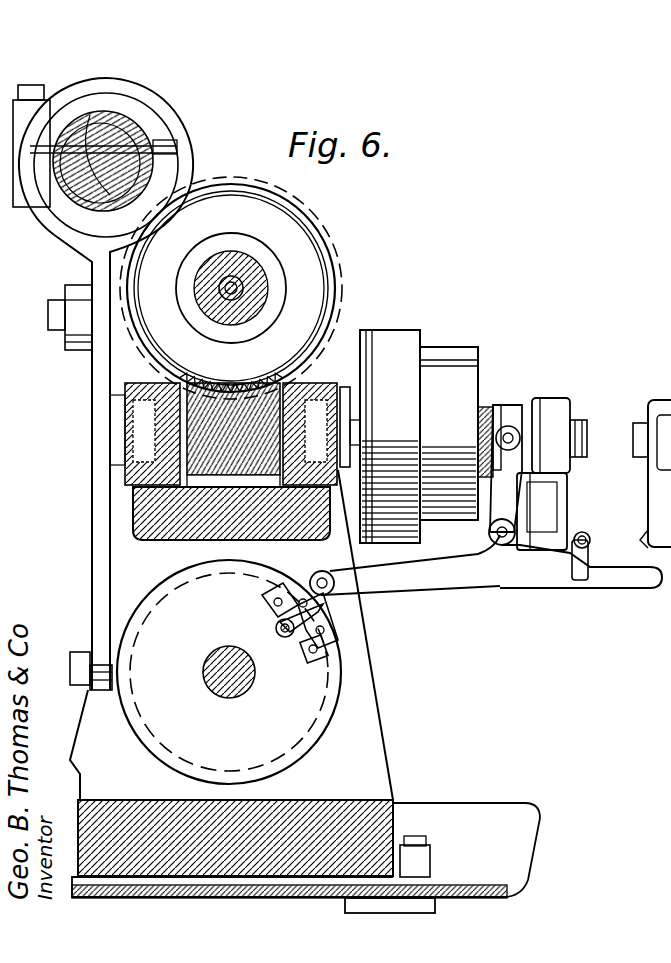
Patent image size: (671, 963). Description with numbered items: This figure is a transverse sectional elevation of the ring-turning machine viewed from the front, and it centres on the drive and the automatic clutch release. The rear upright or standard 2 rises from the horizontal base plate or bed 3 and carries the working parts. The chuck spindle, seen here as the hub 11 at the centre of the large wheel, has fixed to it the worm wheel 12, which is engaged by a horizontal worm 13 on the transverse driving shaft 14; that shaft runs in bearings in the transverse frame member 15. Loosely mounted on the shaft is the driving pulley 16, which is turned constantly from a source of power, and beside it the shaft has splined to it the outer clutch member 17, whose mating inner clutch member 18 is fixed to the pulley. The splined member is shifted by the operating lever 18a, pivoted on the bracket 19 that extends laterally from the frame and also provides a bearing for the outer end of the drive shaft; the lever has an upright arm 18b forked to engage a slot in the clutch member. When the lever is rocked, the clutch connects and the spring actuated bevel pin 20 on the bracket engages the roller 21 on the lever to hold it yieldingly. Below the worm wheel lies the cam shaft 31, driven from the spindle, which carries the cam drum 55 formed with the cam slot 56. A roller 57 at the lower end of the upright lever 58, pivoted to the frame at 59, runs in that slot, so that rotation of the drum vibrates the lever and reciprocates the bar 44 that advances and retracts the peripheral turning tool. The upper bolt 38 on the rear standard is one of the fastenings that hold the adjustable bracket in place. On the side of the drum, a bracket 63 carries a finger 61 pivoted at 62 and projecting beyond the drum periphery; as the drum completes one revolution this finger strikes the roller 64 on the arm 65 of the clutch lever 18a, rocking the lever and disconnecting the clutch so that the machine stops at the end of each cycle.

The rear upright or standard 2 is at (206, 439).
The horizontal base plate or bed 3 is at (322, 802).
The hub of gear 11 is at (266, 275).
The worm wheel 12 is at (344, 300).
The worm 13 is at (248, 395).
The driving shaft 14 is at (313, 295).
The transverse frame member 15 is at (178, 542).
The driving pulley 16 is at (441, 358).
The outer clutch member 17 is at (500, 400).
The inner clutch member 18 is at (485, 410).
The operating lever 18a is at (575, 578).
The upright arm 18b is at (508, 497).
The bracket 19 is at (493, 415).
The spring actuated bevel pin 20 is at (585, 536).
The roller 21 is at (589, 545).
The cam shaft 31 is at (228, 698).
The upper bolt 38 is at (92, 440).
The bar 44 is at (150, 165).
The cam drum 55 is at (229, 672).
The cam slot 56 is at (138, 734).
The roller 57 is at (110, 650).
The lever 58 is at (92, 490).
The pivot 59 is at (150, 128).
The finger 61 is at (325, 608).
The pivot 62 is at (287, 640).
The bracket 63 is at (332, 640).
The roller 64 is at (318, 573).
The arm 65 is at (420, 580).